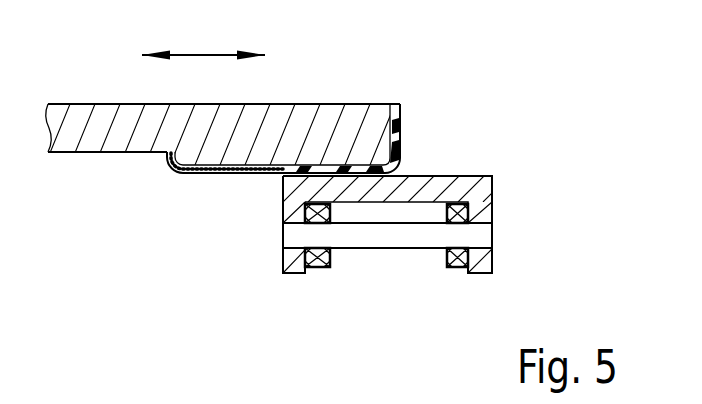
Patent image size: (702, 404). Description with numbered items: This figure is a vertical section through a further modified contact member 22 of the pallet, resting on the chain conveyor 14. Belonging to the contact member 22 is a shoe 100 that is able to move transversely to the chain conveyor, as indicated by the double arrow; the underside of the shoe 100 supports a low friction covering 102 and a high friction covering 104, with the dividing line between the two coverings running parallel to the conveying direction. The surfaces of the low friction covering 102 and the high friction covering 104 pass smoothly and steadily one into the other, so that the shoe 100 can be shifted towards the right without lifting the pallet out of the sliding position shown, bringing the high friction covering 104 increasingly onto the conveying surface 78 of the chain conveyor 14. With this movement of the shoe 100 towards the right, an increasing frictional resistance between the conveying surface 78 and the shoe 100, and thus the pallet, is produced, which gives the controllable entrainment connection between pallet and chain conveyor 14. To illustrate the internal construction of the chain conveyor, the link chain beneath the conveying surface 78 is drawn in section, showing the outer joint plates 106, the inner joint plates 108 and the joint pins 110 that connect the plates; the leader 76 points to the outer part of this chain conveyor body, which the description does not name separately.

The shoe 100 is at (316, 124).
The low friction covering 102 is at (403, 138).
The high friction covering 104 is at (212, 176).
The conveying surface 78 is at (446, 176).
The guide rail 76 is at (487, 197).
The joint pins 110 is at (387, 238).
The inner joint plates 108 is at (322, 268).
The outer joint plates 106 is at (465, 268).
The chain conveyor 14 is at (511, 126).
The contact member 22 is at (115, 228).